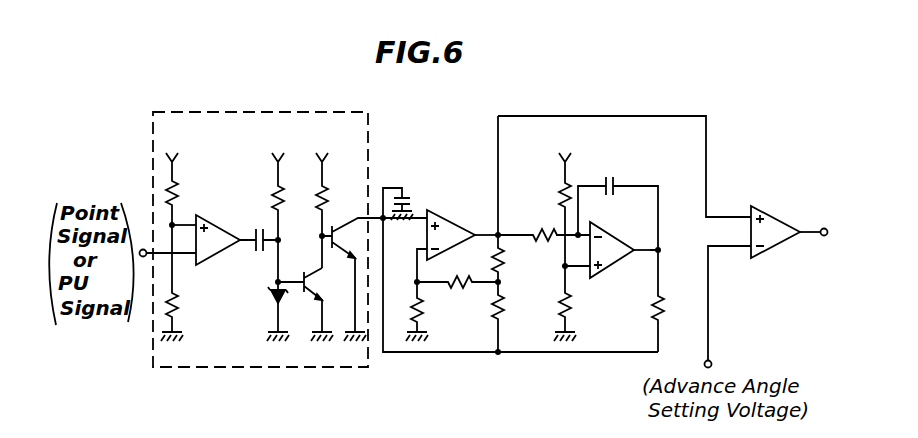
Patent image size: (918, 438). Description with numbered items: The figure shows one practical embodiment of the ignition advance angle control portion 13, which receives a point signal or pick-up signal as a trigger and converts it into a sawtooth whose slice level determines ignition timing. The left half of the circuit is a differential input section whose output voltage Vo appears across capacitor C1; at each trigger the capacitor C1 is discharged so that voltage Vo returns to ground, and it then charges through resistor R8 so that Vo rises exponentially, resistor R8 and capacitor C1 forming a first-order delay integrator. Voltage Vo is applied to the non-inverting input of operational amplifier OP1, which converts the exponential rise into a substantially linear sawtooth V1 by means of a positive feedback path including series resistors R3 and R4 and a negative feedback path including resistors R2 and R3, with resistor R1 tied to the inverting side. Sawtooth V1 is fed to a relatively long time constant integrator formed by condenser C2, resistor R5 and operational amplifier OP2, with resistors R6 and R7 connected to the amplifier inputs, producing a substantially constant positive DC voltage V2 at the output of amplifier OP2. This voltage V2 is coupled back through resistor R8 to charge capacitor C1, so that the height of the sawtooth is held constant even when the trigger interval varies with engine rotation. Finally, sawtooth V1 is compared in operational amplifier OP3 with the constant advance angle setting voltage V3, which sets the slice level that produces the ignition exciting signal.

The ignition advance angle control portion 13 is at (495, 108).
The voltage across capacitor C1 Vo is at (403, 227).
The capacitor C1 is at (409, 196).
The condenser C2 is at (611, 182).
The operational amplifier OP1 is at (458, 227).
The operational amplifier OP2 is at (592, 235).
The operational amplifier OP3 is at (782, 226).
The resistor R1 is at (423, 311).
The resistor R2 is at (447, 282).
The resistor R3 is at (502, 250).
The resistor R4 is at (503, 312).
The resistor R5 is at (533, 233).
The resistor R6 is at (561, 198).
The resistor R7 is at (572, 304).
The resistor R8 is at (668, 311).
The sawtooth voltage V1 is at (682, 104).
The positive DC voltage V2 is at (672, 251).
The advance angle setting voltage V3 is at (728, 309).